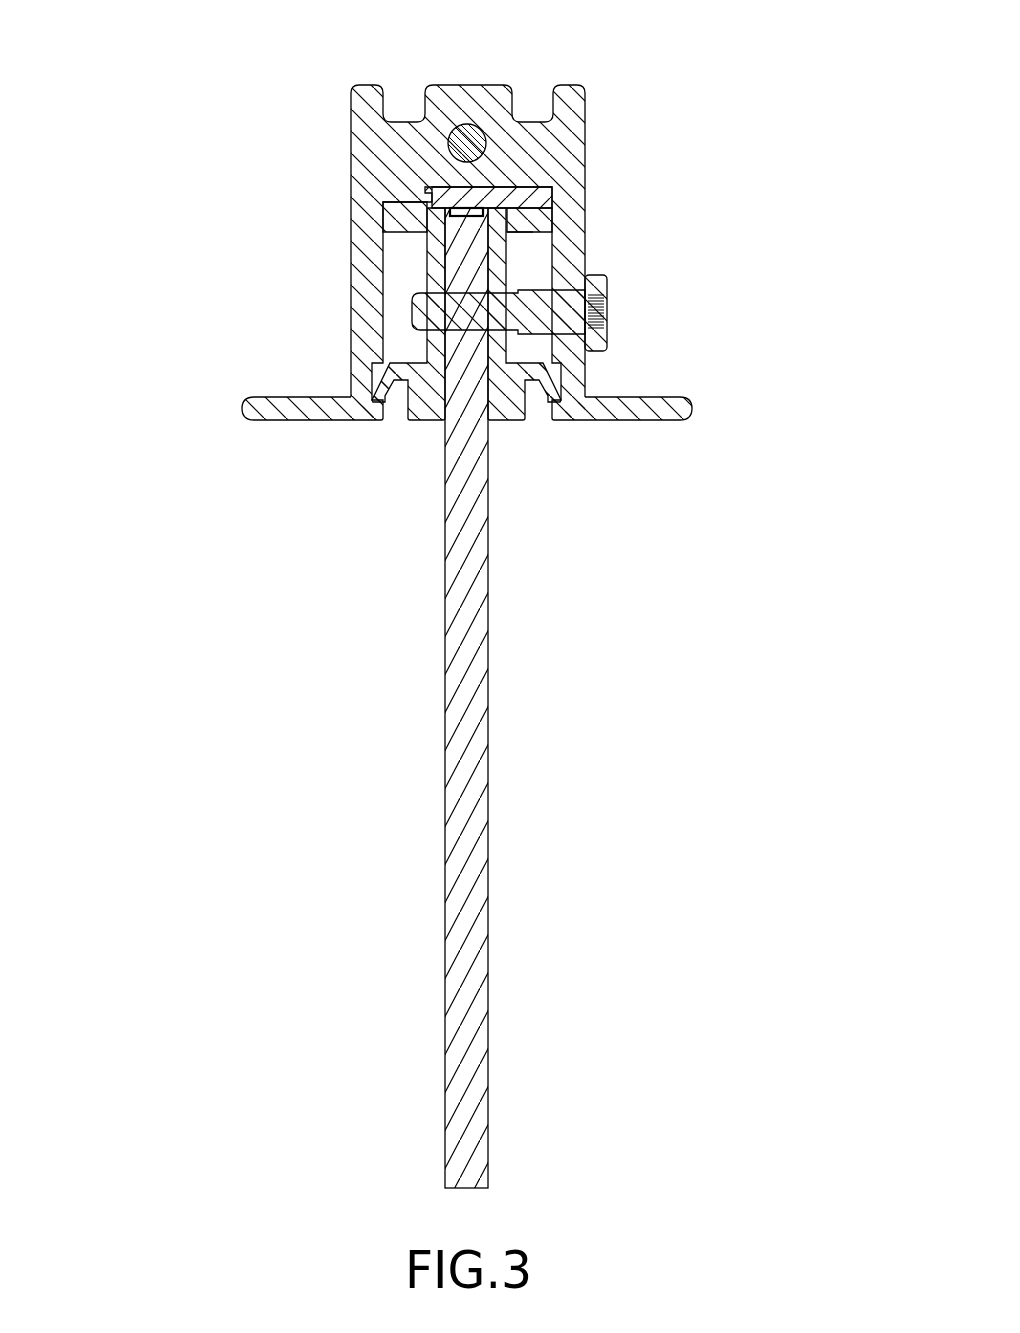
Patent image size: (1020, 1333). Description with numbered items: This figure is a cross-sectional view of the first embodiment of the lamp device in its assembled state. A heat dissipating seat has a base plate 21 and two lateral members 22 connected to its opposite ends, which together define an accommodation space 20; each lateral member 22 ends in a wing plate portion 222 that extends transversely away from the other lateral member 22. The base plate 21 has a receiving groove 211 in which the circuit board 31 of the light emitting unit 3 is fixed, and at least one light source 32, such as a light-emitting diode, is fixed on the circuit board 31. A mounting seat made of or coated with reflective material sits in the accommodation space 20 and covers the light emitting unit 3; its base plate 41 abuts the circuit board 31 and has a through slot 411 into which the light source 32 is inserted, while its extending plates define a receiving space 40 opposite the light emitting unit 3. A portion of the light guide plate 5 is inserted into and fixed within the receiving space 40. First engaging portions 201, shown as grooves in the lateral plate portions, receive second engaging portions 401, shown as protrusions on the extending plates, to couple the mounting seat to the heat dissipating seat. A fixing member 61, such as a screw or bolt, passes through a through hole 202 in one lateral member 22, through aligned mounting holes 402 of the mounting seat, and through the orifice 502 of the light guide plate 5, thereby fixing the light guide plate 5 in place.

The light emitting unit 3 is at (540, 176).
The light guide plate 5 is at (493, 722).
The accommodation space 20 is at (400, 253).
The base plate 21 is at (453, 98).
The lateral member 22 is at (200, 404).
The circuit board 31 is at (550, 188).
The light source 32 is at (530, 221).
The receiving space 40 is at (489, 405).
The base plate 41 is at (405, 212).
The fixing member 61 is at (602, 282).
The first engaging portion 201 is at (399, 405).
The through hole 202 is at (569, 292).
The receiving groove 211 is at (575, 180).
The wing plate portion 222 is at (665, 415).
The second engaging portion 401 is at (393, 378).
The mounting hole 402 is at (415, 312).
The through slot 411 is at (450, 213).
The orifice 502 is at (545, 310).